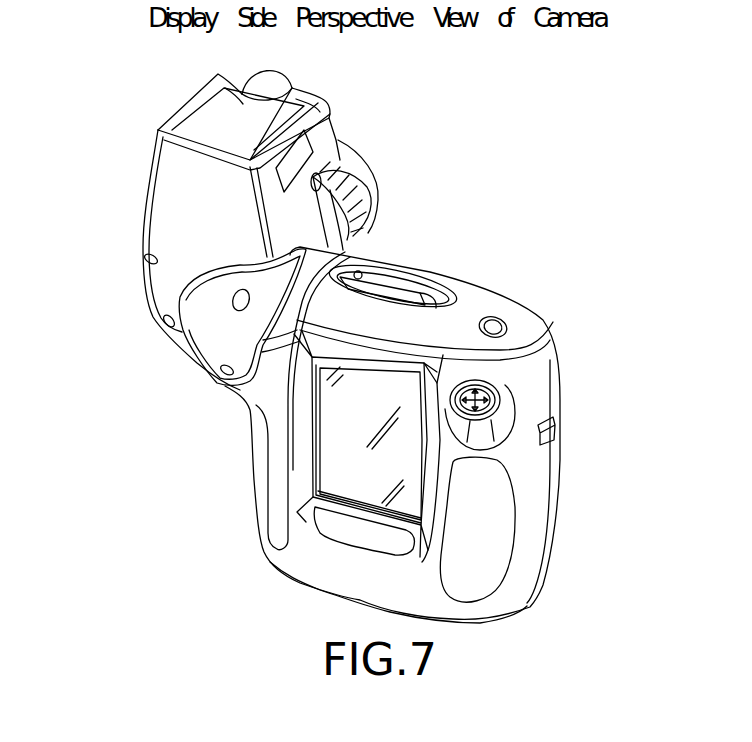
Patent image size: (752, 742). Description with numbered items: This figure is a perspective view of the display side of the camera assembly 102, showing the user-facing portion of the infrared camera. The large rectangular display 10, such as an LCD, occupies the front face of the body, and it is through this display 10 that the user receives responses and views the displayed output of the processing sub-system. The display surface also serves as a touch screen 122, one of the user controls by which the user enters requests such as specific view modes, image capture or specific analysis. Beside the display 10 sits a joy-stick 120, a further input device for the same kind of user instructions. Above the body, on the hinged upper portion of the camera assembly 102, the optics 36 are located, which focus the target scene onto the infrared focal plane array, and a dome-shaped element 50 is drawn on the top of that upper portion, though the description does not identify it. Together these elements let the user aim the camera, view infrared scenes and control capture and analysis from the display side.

The display 10 is at (357, 420).
The optics 36 is at (376, 160).
The button 50 is at (296, 81).
The camera assembly 102 is at (148, 297).
The joy-stick 120 is at (489, 405).
The touch screen 122 is at (357, 463).